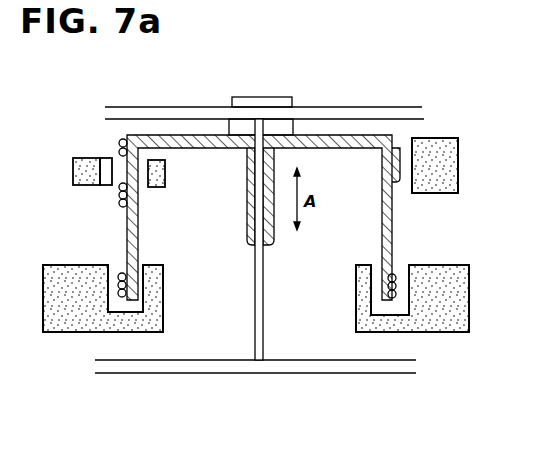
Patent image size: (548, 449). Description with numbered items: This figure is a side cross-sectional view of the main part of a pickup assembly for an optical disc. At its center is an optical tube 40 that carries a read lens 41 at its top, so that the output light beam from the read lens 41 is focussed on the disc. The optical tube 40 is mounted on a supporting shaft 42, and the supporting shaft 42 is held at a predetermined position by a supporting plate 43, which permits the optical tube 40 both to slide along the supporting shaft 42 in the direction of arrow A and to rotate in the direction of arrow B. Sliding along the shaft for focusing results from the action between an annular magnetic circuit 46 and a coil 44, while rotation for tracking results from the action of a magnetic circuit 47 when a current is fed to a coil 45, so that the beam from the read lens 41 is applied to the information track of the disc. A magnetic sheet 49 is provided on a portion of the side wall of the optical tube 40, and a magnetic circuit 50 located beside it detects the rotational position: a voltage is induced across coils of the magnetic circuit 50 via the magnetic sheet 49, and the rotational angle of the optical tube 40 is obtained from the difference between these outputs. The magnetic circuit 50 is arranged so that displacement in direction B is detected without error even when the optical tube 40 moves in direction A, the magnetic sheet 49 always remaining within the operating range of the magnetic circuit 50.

The optical tube 40 is at (336, 135).
The read lens 41 is at (263, 100).
The supporting shaft 42 is at (258, 318).
The supporting plate 43 is at (401, 113).
The coil 44 is at (122, 297).
The coil 45 is at (119, 144).
The annular magnetic circuit 46 is at (63, 333).
The magnetic circuit 47 is at (148, 172).
The magnetic sheet 49 is at (396, 147).
The magnetic circuit 50 is at (451, 162).